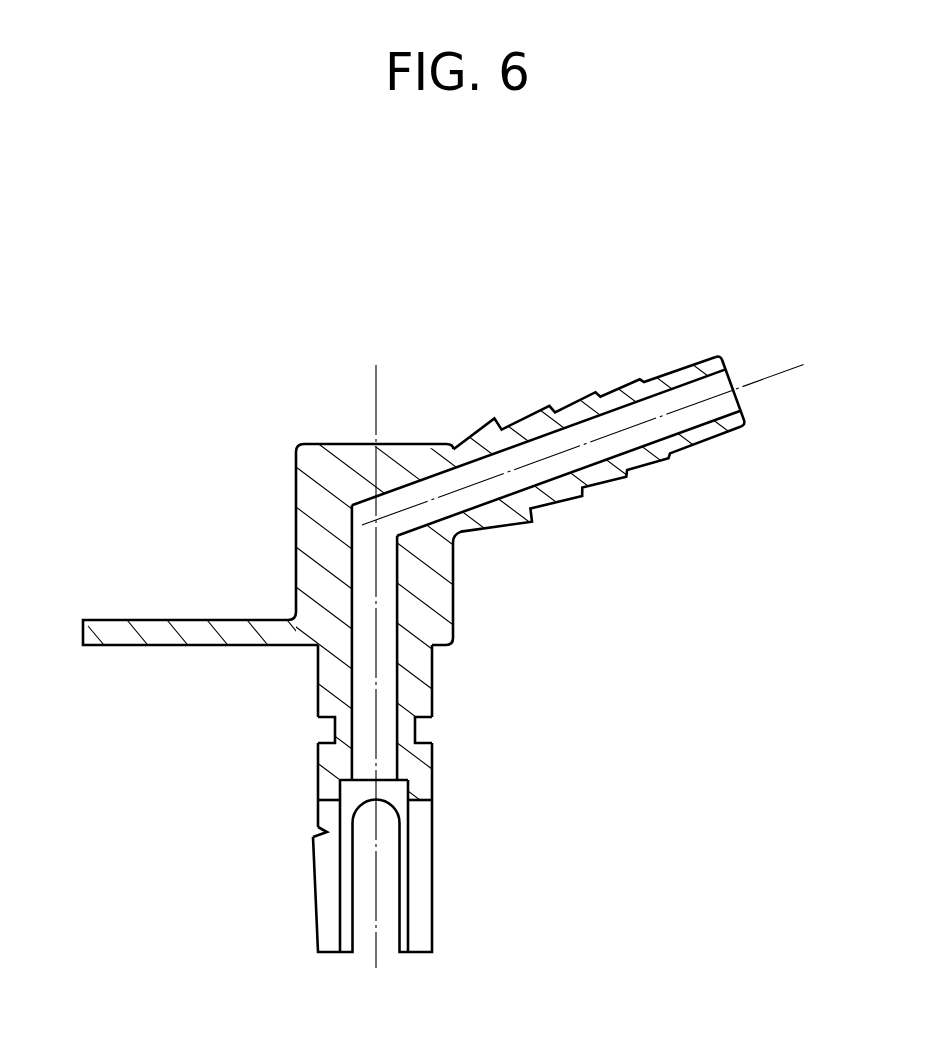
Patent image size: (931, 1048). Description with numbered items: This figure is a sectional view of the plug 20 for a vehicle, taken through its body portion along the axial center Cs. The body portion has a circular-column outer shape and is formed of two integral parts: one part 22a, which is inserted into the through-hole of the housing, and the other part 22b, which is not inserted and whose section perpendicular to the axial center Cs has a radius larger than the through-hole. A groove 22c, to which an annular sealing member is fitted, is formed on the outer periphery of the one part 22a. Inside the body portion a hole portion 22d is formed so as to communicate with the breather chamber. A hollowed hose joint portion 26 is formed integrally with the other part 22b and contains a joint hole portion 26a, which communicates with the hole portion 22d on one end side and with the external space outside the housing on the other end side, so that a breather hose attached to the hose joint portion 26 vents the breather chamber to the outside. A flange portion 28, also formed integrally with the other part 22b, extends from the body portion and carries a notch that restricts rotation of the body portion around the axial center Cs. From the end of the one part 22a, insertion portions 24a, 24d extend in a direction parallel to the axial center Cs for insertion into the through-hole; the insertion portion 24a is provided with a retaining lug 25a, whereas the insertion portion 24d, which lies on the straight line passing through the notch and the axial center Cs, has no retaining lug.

The plug 20 is at (560, 235).
The axial center Cs is at (377, 390).
The hose joint portion 26 is at (632, 393).
The joint hole portion 26a is at (707, 422).
The flange portion 28 is at (195, 635).
The other part of body portion 22b is at (410, 598).
The one part of body portion 22a is at (433, 706).
The groove 22c is at (420, 732).
The hole portion 22d is at (368, 753).
The insertion portion 24a is at (333, 933).
The insertion portion 24d is at (423, 933).
The retaining lug 25a is at (322, 845).